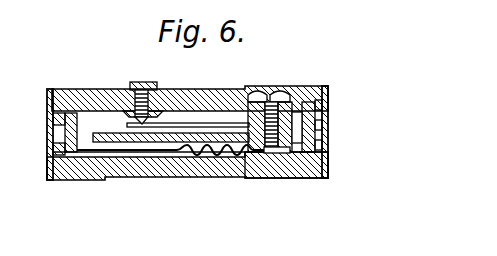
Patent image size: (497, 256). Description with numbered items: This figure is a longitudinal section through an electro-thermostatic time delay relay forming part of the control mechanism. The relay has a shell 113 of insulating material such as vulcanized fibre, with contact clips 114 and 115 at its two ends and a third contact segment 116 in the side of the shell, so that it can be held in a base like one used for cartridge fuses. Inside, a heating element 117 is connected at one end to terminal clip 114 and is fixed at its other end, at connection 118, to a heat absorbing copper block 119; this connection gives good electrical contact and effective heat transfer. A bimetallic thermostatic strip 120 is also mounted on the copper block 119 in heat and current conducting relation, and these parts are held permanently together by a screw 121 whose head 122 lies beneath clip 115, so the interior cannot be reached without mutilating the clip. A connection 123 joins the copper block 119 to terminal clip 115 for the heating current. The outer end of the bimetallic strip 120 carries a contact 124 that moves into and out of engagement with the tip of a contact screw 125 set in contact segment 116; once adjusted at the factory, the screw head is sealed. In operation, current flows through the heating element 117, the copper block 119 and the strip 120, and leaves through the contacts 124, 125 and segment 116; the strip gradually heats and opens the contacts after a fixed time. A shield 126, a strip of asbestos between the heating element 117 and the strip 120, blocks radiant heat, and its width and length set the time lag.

The shell 113 is at (179, 175).
The contact clip 114 is at (80, 88).
The contact clip 115 is at (328, 178).
The contact segment 116 is at (190, 77).
The heating element 117 is at (218, 152).
The connection 118 is at (258, 154).
The heat absorbing copper block 119 is at (318, 137).
The bimetallic thermostatic strip 120 is at (215, 124).
The screw 121 is at (328, 98).
The head 122 is at (290, 88).
The connection 123 is at (328, 167).
The contact 124 is at (142, 128).
The contact screw 125 is at (118, 88).
The shield 126 is at (103, 139).